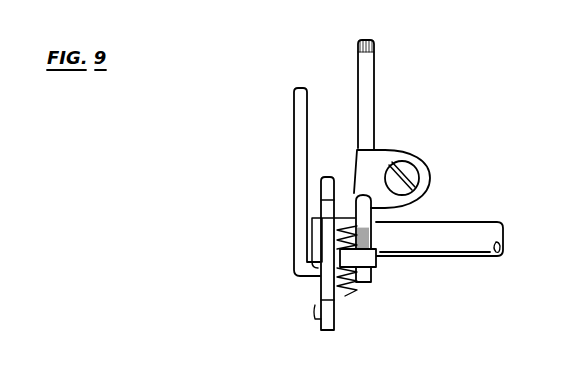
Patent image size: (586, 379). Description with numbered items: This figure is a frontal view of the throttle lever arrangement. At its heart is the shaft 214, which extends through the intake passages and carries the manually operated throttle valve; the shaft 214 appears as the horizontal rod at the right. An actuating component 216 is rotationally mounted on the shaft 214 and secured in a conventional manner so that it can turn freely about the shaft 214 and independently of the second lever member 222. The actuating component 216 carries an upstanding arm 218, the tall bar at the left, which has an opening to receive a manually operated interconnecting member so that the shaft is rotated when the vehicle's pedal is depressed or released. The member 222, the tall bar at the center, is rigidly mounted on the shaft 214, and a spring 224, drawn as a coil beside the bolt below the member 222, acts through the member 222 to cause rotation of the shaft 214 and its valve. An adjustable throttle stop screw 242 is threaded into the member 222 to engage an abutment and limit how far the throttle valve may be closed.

The shaft 214 is at (468, 246).
The actuating component 216 is at (270, 263).
The upstanding arm 218 is at (293, 143).
The member 222 is at (385, 72).
The spring 224 is at (344, 293).
The adjustable throttle stop screw 242 is at (414, 178).